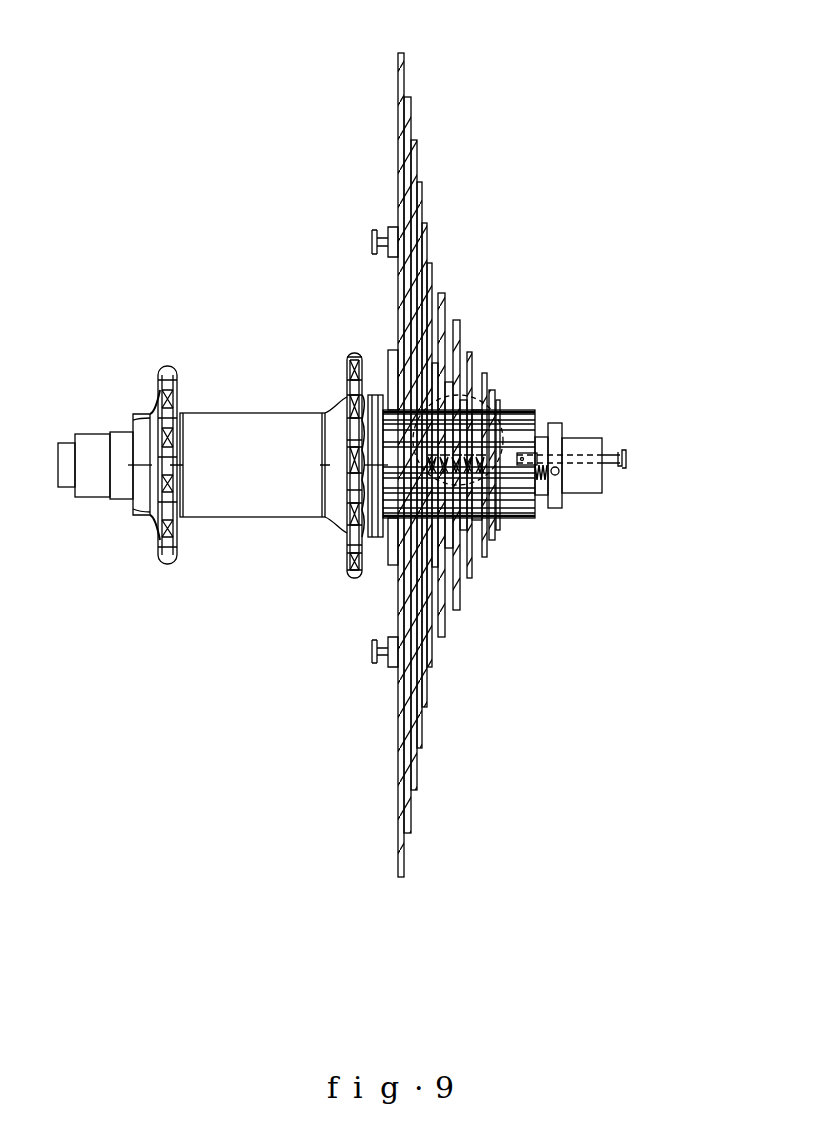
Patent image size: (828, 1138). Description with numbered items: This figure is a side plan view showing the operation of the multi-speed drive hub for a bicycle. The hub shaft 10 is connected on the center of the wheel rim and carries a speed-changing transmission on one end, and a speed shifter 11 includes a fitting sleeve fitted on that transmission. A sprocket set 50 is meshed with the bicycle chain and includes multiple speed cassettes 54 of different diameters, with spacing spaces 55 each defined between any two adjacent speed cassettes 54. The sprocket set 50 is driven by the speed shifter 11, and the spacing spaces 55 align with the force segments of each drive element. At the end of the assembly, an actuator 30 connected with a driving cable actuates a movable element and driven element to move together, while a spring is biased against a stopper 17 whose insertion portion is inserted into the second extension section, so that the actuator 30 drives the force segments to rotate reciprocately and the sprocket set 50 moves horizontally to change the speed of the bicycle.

The hub shaft 10 is at (230, 298).
The speed shifter 11 is at (578, 358).
The stopper 17 is at (558, 498).
The actuator 30 is at (630, 457).
The sprocket set 50 is at (495, 172).
The speed cassettes 54 is at (448, 327).
The spacing spaces 55 is at (452, 323).